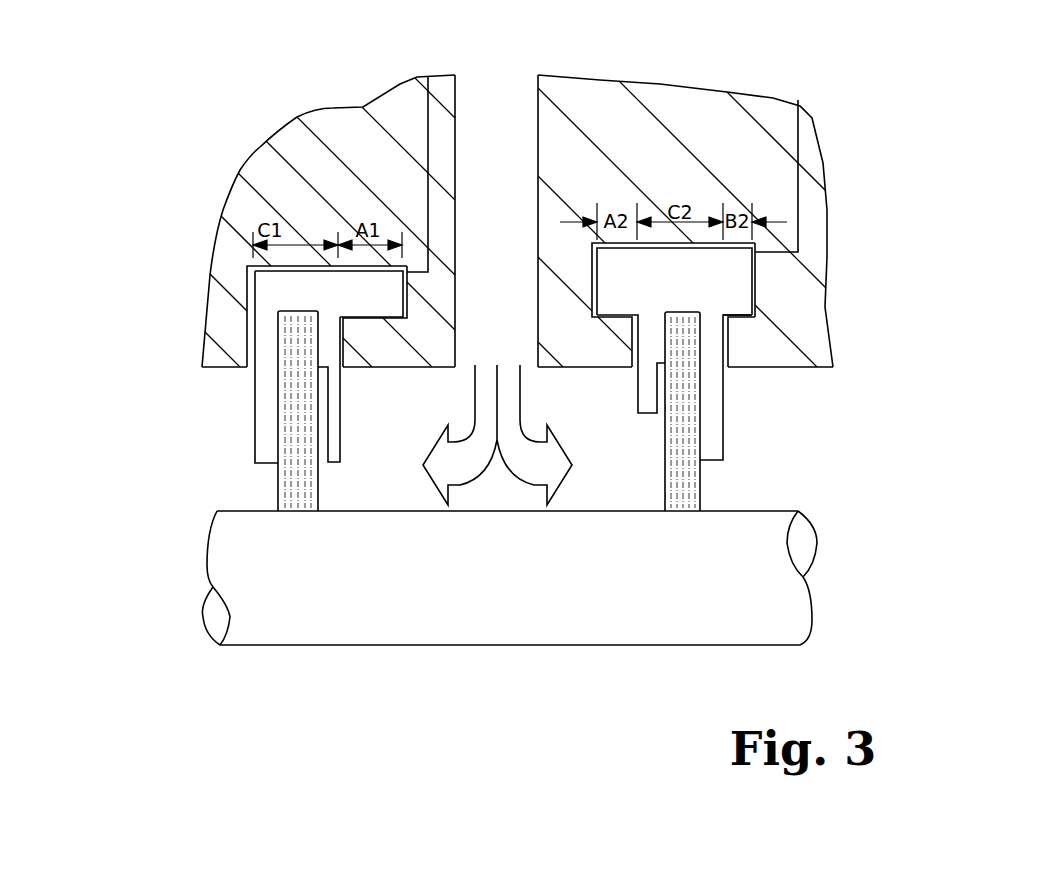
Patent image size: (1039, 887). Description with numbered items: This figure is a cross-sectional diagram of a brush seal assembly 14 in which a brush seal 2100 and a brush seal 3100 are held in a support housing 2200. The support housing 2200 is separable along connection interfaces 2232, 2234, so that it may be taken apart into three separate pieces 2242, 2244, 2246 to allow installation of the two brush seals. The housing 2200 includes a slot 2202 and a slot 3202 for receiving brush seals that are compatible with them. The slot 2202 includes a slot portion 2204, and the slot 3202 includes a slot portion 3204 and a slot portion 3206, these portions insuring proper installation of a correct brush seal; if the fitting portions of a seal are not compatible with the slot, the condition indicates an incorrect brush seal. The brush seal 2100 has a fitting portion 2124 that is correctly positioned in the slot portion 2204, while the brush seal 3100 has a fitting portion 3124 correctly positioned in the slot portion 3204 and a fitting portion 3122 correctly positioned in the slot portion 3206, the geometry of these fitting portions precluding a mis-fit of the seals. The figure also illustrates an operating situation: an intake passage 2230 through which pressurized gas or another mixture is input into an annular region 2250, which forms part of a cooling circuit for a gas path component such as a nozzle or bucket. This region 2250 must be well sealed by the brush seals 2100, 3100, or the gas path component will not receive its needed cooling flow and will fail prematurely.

The brush seal assembly 14 is at (926, 452).
The brush seal 2100 is at (244, 427).
The fitting portion 2124 is at (370, 305).
The support housing 2200 is at (830, 368).
The slot 2202 is at (244, 320).
The slot portion 2204 is at (407, 293).
The intake passage 2230 is at (477, 108).
The connection interface 2232 is at (428, 110).
The connection interface 2234 is at (792, 110).
The housing piece 2242 is at (280, 128).
The housing piece 2244 is at (690, 85).
The housing piece 2246 is at (823, 163).
The annular region 2250 is at (363, 494).
The brush seal 3100 is at (738, 444).
The fitting portion 3122 is at (617, 293).
The fitting portion 3124 is at (742, 300).
The slot 3202 is at (762, 313).
The slot portion 3204 is at (760, 274).
The slot portion 3206 is at (592, 273).